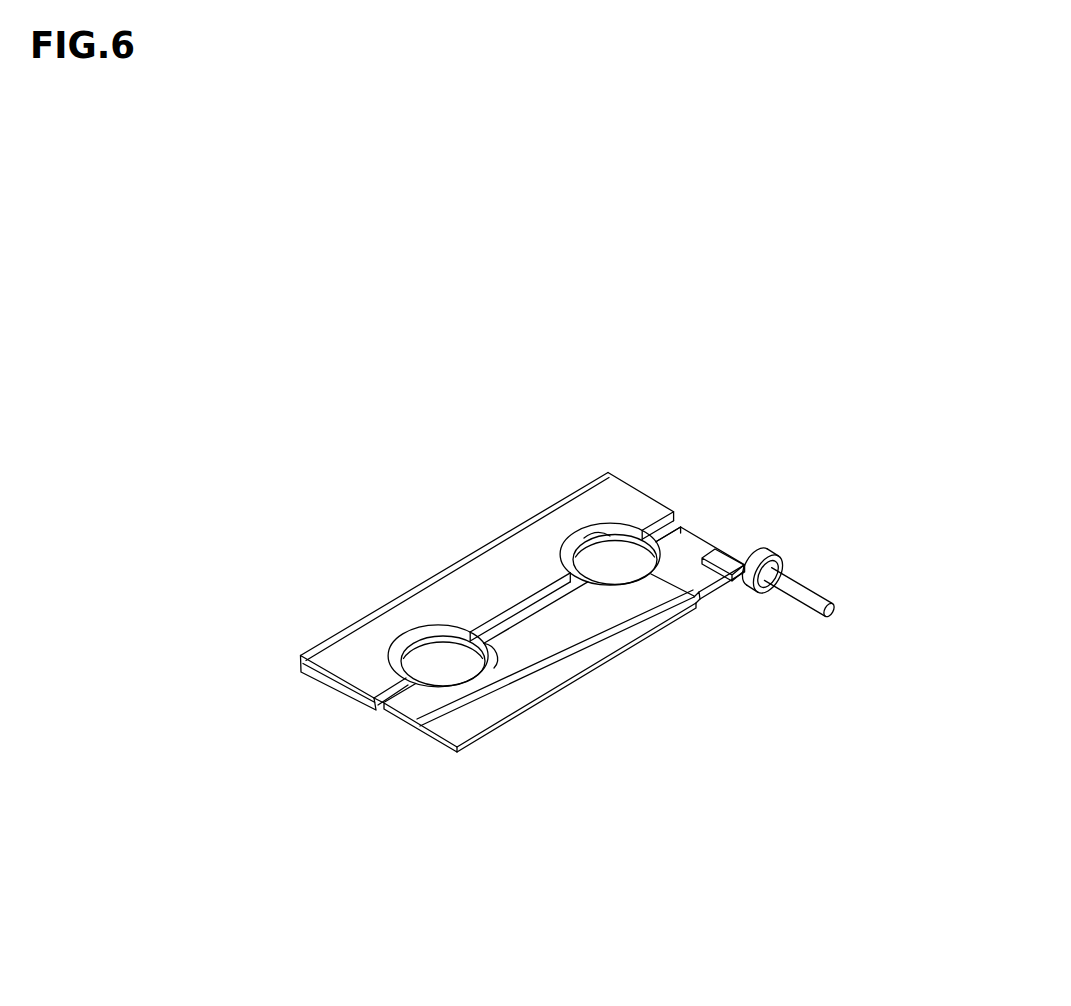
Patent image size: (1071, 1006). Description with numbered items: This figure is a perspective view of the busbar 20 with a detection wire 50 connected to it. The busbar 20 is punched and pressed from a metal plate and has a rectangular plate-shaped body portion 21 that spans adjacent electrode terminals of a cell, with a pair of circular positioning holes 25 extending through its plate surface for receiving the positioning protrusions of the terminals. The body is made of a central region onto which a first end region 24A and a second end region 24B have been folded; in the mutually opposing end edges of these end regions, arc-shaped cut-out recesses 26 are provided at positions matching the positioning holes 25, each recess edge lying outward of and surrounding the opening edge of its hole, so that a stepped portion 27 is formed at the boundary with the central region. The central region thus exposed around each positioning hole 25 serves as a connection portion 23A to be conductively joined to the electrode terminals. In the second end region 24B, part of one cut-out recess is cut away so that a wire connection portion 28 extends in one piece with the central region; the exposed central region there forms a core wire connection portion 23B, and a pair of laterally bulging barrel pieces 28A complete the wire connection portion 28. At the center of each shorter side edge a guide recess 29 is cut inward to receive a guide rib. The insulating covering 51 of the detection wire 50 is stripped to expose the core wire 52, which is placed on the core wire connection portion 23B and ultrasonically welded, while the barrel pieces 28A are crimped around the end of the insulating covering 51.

The busbar 20 is at (430, 477).
The body portion 21 is at (331, 630).
The first end region 24A is at (468, 607).
The second end region 24B is at (566, 642).
The connection portion 23A is at (441, 637).
The core wire connection portion 23B is at (688, 553).
The positioning hole 25 is at (447, 677).
The cut-out recess 26 is at (578, 543).
The stepped portion 27 is at (416, 646).
The wire connection portion 28 is at (815, 511).
The barrel piece 28A is at (763, 553).
The guide recess 29 is at (674, 540).
The detection wire 50 is at (769, 652).
The insulating covering 51 is at (792, 596).
The core wire 52 is at (719, 556).